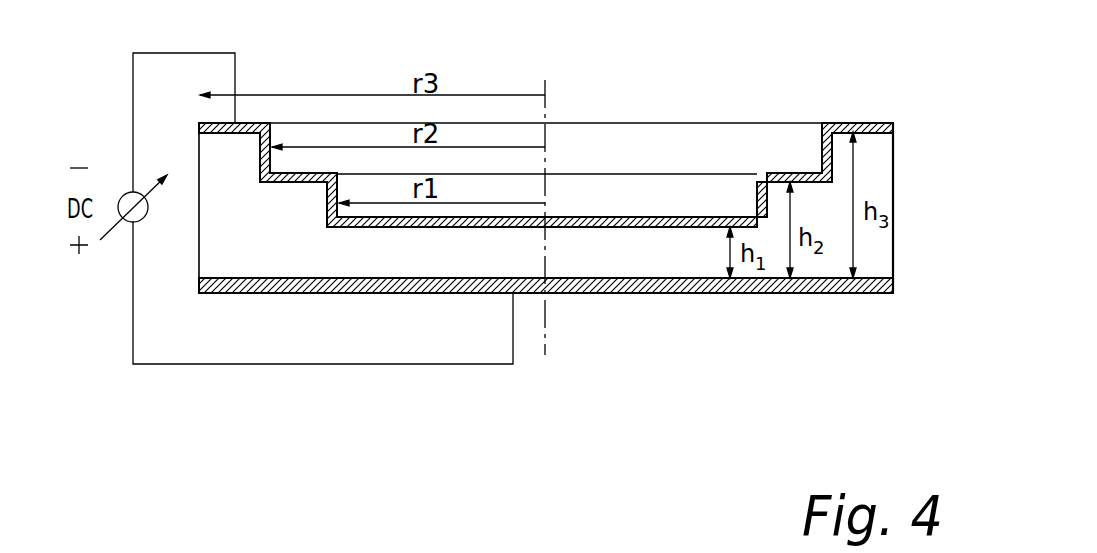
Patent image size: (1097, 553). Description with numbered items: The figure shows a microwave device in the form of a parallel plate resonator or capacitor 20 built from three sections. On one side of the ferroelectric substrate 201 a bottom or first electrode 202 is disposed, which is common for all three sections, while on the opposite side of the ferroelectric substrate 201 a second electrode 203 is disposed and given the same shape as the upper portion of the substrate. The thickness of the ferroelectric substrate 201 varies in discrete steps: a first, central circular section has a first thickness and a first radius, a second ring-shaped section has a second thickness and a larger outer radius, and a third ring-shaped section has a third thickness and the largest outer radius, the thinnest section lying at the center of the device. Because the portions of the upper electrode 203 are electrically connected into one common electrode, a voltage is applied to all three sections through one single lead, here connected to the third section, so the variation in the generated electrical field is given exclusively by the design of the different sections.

The capacitor 20 is at (425, 400).
The ferroelectric substrate 201 is at (872, 177).
The first electrode 202 is at (812, 295).
The second electrode 203 is at (786, 215).